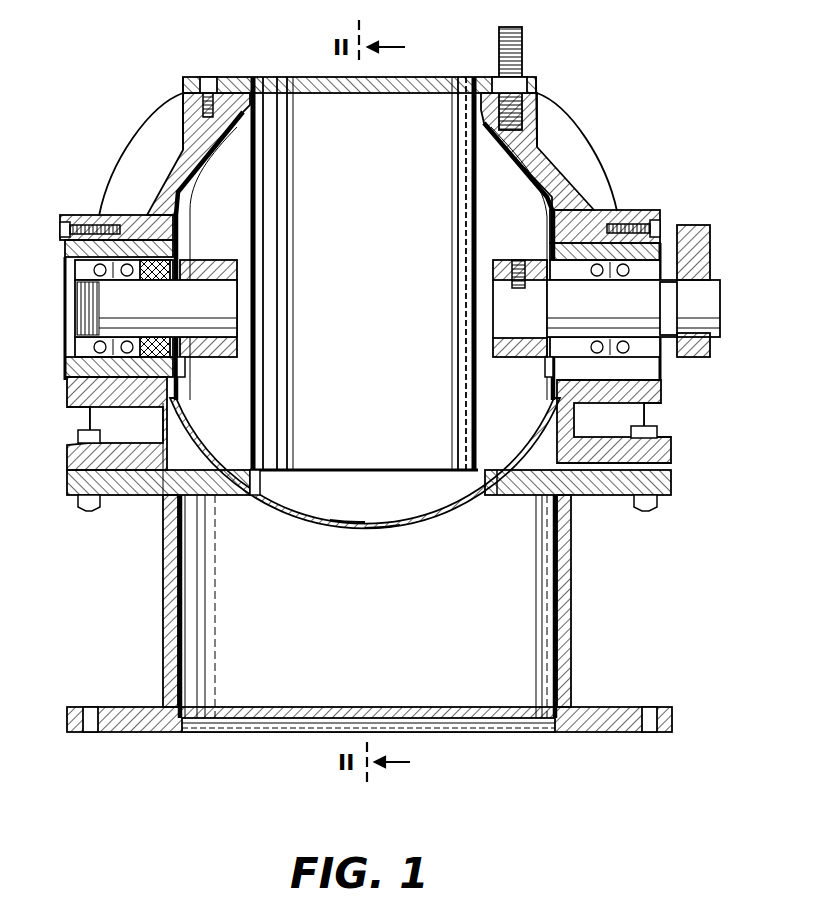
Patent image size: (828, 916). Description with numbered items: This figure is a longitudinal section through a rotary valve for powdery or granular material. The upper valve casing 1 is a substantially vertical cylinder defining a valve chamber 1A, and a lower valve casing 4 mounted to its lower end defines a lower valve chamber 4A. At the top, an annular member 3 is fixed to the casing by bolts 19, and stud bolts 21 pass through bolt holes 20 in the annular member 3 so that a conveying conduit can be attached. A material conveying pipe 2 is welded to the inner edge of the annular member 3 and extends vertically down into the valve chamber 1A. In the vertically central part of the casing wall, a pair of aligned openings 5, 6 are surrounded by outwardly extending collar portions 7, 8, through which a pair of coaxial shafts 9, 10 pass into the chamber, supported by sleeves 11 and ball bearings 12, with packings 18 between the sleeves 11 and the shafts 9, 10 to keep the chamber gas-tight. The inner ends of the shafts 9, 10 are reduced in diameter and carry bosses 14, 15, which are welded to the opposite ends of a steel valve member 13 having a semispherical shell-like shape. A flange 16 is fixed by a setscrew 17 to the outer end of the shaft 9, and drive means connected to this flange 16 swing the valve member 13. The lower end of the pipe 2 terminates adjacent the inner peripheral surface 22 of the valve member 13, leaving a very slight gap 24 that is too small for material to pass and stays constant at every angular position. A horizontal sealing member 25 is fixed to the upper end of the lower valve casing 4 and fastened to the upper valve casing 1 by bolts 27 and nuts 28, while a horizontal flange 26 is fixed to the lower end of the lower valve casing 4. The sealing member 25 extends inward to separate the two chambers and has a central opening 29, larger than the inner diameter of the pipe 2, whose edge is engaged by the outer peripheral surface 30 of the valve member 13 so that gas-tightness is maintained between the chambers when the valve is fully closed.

The upper valve casing 1 is at (536, 132).
The valve chamber 1A is at (188, 171).
The conveying pipe 2 is at (249, 194).
The annular member 3 is at (484, 76).
The lower valve casing 4 is at (574, 562).
The lower valve chamber 4A is at (546, 614).
The opening 5 is at (547, 260).
The opening 6 is at (175, 259).
The collar portion 7 is at (596, 210).
The collar portion 8 is at (127, 215).
The shaft 9 is at (716, 315).
The shaft 10 is at (92, 297).
The sleeve 11 is at (62, 252).
The ball bearing 12 is at (66, 367).
The valve member 13 is at (350, 527).
The boss 14 is at (497, 259).
The boss 15 is at (215, 259).
The flange 16 is at (712, 233).
The setscrew 17 is at (687, 281).
The packing 18 is at (184, 370).
The bolt 19 is at (208, 76).
The bolt hole 20 is at (521, 78).
The stud bolt 21 is at (522, 34).
The inner peripheral surface 22 is at (332, 512).
The gap 24 is at (256, 470).
The sealing member 25 is at (673, 480).
The flange 26 is at (612, 706).
The bolt 27 is at (78, 437).
The nut 28 is at (76, 508).
The central opening 29 is at (497, 494).
The outer peripheral surface 30 is at (388, 525).